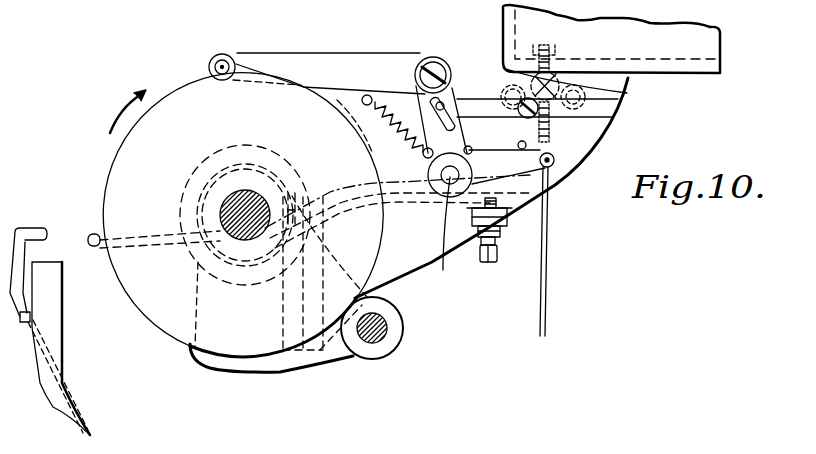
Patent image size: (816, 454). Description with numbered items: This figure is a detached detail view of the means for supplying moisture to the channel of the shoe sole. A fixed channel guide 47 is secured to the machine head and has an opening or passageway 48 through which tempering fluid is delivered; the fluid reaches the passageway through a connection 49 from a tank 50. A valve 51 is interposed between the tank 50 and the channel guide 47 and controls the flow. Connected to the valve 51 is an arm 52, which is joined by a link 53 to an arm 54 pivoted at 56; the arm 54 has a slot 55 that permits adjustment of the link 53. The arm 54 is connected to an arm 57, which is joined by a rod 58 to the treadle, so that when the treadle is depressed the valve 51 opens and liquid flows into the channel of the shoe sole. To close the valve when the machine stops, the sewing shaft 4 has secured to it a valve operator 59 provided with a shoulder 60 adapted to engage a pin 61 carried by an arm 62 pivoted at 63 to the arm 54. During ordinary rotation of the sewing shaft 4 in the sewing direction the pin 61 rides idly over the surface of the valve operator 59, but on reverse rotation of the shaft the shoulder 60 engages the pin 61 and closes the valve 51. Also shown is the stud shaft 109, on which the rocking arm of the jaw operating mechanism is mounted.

The sewing shaft 4 is at (232, 197).
The channel guide 47 is at (60, 407).
The opening or passageway 48 is at (50, 367).
The connection 49 is at (97, 228).
The tank 50 is at (717, 43).
The valve 51 is at (506, 183).
The arm 52 is at (448, 116).
The link 53 is at (445, 105).
The arm 54 is at (470, 129).
The slot 55 is at (455, 135).
The pivot 56 is at (443, 270).
The arm 57 is at (510, 220).
The rod 58 is at (546, 218).
The valve operator 59 is at (188, 91).
The shoulder 60 is at (258, 39).
The pin 61 is at (211, 65).
The arm 62 is at (345, 27).
The pivot 63 is at (433, 68).
The stud shaft 109 is at (388, 327).